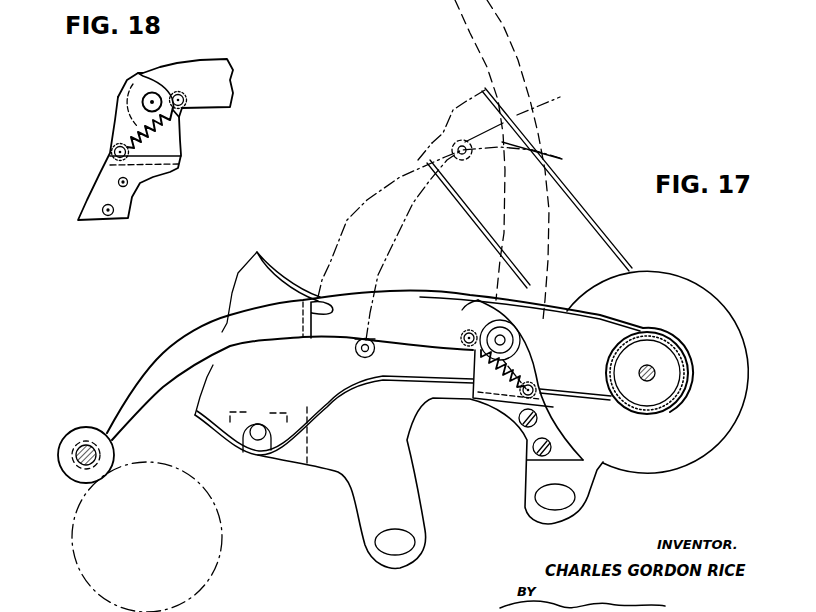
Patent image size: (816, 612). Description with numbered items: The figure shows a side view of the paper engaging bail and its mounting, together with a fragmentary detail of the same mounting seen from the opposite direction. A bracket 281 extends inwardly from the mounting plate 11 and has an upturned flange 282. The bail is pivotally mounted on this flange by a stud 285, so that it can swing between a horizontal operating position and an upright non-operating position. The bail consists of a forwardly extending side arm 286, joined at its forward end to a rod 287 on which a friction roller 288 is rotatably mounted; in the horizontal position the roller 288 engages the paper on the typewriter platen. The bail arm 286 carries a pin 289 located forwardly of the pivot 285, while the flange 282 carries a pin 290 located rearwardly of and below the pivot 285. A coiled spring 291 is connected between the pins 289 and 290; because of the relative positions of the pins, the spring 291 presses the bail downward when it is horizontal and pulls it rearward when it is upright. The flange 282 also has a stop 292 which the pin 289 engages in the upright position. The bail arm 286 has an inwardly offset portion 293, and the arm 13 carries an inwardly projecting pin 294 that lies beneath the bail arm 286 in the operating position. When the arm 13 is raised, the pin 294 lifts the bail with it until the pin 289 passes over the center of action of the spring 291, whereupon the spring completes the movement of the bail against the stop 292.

In FIG. 17, the mounting plate 11 is at (344, 468).
In FIG. 17, the arm 13 is at (270, 262).
In FIG. 18, the bracket 281 is at (148, 173).
In FIG. 17, the bracket 281 is at (510, 412).
In FIG. 17, the upturned flange 282 is at (536, 350).
In FIG. 18, the stud 285 is at (143, 101).
In FIG. 17, the stud 285 is at (520, 339).
In FIG. 18, the side arm 286 is at (227, 80).
In FIG. 17, the side arm 286 is at (198, 318).
In FIG. 17, the rod 287 is at (84, 447).
In FIG. 17, the friction roller 288 is at (63, 444).
In FIG. 18, the pin 289 is at (181, 93).
In FIG. 17, the pin 289 is at (466, 344).
In FIG. 18, the pin 290 is at (112, 152).
In FIG. 17, the pin 290 is at (537, 387).
In FIG. 18, the coiled spring 291 is at (175, 137).
In FIG. 17, the coiled spring 291 is at (476, 400).
In FIG. 18, the stop 292 is at (142, 74).
In FIG. 17, the stop 292 is at (487, 305).
In FIG. 17, the inwardly offset portion 293 is at (327, 300).
In FIG. 17, the pin 294 is at (356, 351).